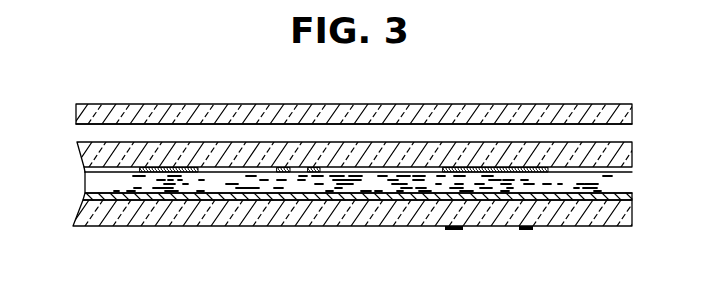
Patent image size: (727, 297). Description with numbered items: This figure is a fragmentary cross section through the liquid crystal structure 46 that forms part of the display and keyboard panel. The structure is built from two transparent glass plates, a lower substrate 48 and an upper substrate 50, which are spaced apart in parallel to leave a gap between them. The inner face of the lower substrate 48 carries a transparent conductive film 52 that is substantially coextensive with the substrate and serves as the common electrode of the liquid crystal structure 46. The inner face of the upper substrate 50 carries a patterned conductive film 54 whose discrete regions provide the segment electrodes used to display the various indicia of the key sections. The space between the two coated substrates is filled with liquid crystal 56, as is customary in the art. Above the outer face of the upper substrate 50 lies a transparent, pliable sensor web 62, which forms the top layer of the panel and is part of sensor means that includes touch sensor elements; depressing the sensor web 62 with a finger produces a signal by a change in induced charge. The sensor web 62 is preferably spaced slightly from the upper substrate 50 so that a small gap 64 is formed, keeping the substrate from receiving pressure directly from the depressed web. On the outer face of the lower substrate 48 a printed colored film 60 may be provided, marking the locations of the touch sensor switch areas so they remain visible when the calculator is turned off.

The liquid crystal structure 46 is at (365, 169).
The lower substrate 48 is at (260, 227).
The upper substrate 50 is at (143, 142).
The transparent conductive film 52 is at (364, 201).
The patterned conductive film 54 is at (193, 167).
The liquid crystal 56 is at (82, 178).
The printed colored film 60 is at (458, 231).
The sensor web 62 is at (410, 103).
The gap 64 is at (615, 133).